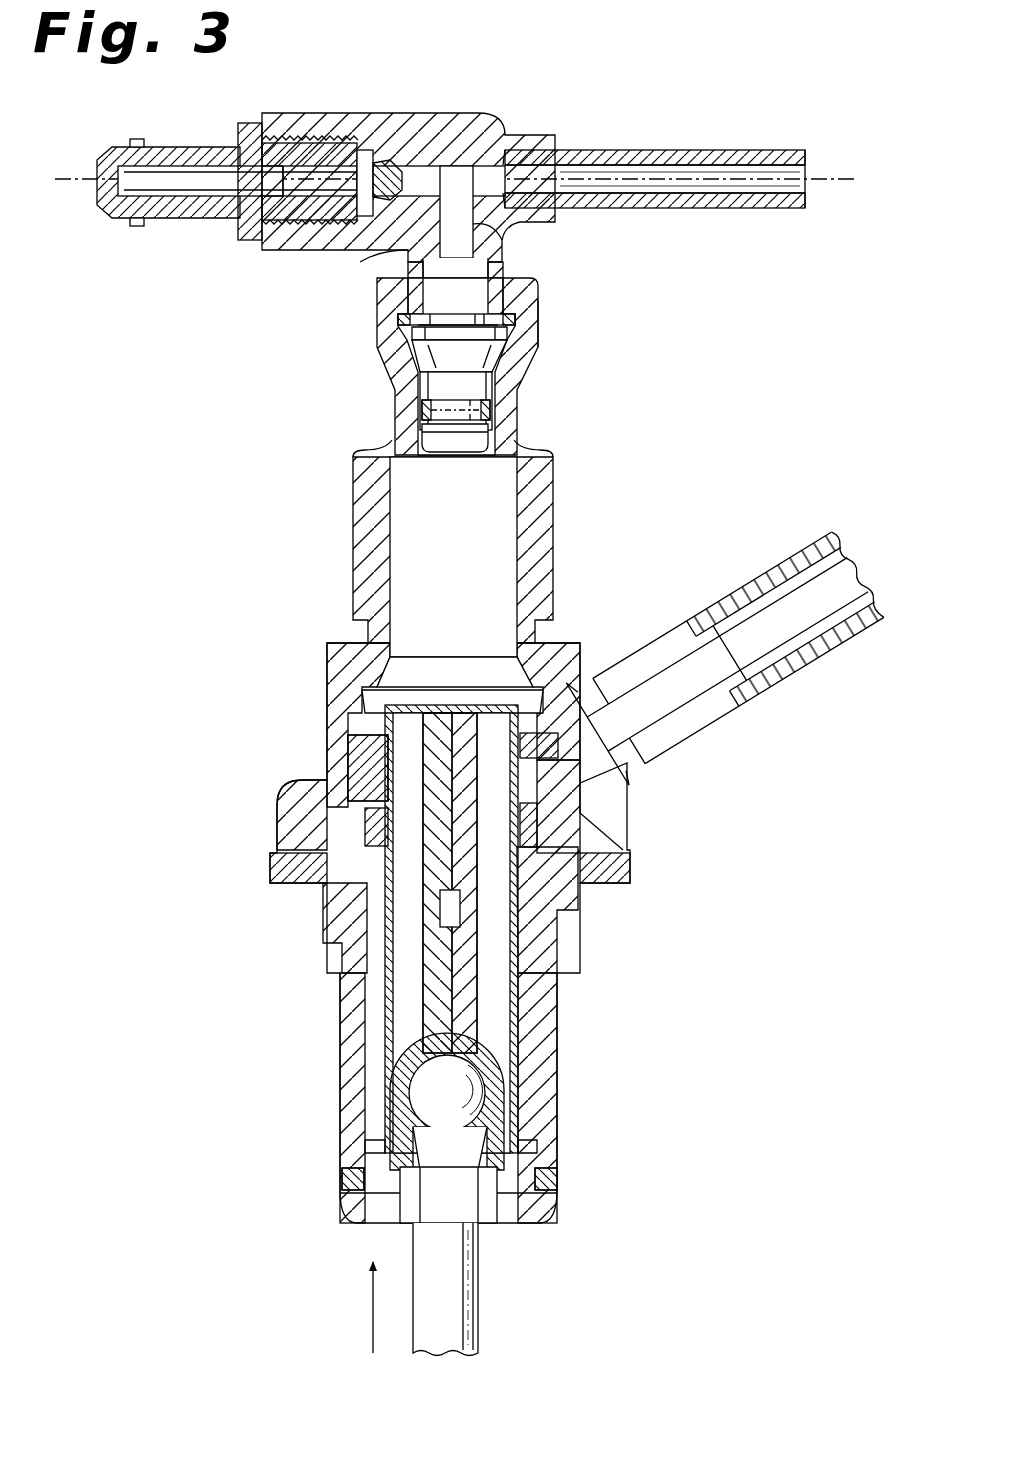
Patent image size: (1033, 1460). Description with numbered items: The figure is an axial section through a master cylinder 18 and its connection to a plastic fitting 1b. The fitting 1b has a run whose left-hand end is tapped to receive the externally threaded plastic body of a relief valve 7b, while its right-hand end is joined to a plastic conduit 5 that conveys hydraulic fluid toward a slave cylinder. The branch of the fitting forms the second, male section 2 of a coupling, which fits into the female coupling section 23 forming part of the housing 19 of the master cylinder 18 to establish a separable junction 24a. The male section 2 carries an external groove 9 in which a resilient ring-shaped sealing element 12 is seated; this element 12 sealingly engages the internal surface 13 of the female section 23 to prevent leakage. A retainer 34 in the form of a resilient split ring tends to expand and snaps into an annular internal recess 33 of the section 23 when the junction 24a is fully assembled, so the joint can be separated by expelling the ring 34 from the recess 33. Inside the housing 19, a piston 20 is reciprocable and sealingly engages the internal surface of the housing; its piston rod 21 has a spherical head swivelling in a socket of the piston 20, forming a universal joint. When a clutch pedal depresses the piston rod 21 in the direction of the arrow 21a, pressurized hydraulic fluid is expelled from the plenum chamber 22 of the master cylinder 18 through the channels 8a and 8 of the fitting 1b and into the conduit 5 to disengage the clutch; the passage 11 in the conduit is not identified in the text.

The fitting 1b is at (258, 278).
The second section of the coupling 2 is at (500, 385).
The conduit 5 is at (702, 150).
The relief valve 7b is at (153, 232).
The channel 8 is at (482, 135).
The channel 8a is at (460, 228).
The external groove 9 is at (500, 336).
The flow passage 11 is at (612, 176).
The sealing element 12 is at (422, 396).
The internal surface 13 is at (425, 447).
The master cylinder 18 is at (306, 678).
The housing 19 is at (330, 745).
The piston 20 is at (470, 1022).
The piston rod 21 is at (450, 1290).
The arrow 21a is at (373, 1313).
The plenum chamber 22 is at (505, 532).
The coupling section 23 is at (392, 290).
The junction 24a is at (548, 298).
The internal recess 33 is at (520, 322).
The retainer 34 is at (400, 320).